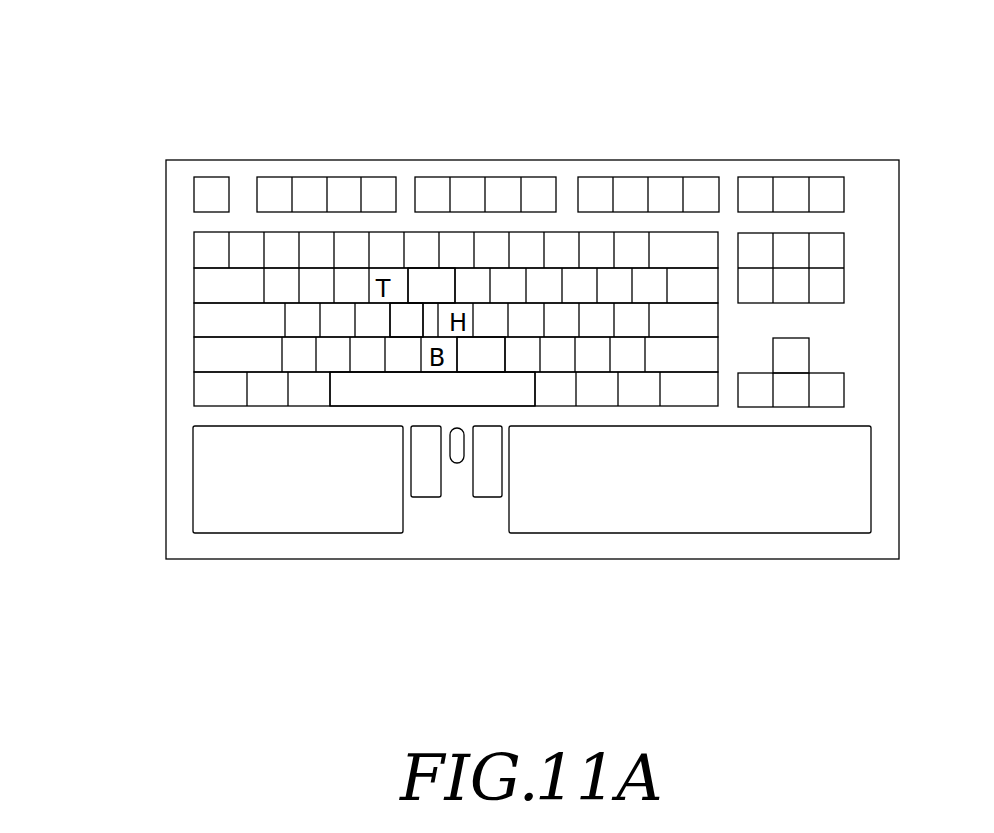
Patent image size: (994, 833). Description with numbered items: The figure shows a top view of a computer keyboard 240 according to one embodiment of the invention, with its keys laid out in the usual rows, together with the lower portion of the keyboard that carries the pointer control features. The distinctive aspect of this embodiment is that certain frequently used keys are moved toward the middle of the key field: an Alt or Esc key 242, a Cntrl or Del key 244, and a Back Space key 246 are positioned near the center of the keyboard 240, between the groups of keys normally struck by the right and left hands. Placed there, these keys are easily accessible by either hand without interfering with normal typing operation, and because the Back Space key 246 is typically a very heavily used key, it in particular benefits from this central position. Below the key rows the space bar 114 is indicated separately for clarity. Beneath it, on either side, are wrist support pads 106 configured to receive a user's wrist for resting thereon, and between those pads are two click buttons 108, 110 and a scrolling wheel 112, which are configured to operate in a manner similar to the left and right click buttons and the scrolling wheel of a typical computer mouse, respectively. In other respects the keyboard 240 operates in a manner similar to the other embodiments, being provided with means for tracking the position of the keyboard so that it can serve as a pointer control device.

The computer keyboard 240 is at (188, 68).
The Back Space key 246 is at (413, 285).
The Cntrl or Del key 244 is at (428, 317).
The Alt or Esc key 242 is at (463, 345).
The space bar 114 is at (370, 392).
The wrist support pads 106 is at (277, 513).
The click button 108 is at (427, 479).
The click button 110 is at (488, 488).
The scrolling wheel 112 is at (455, 462).